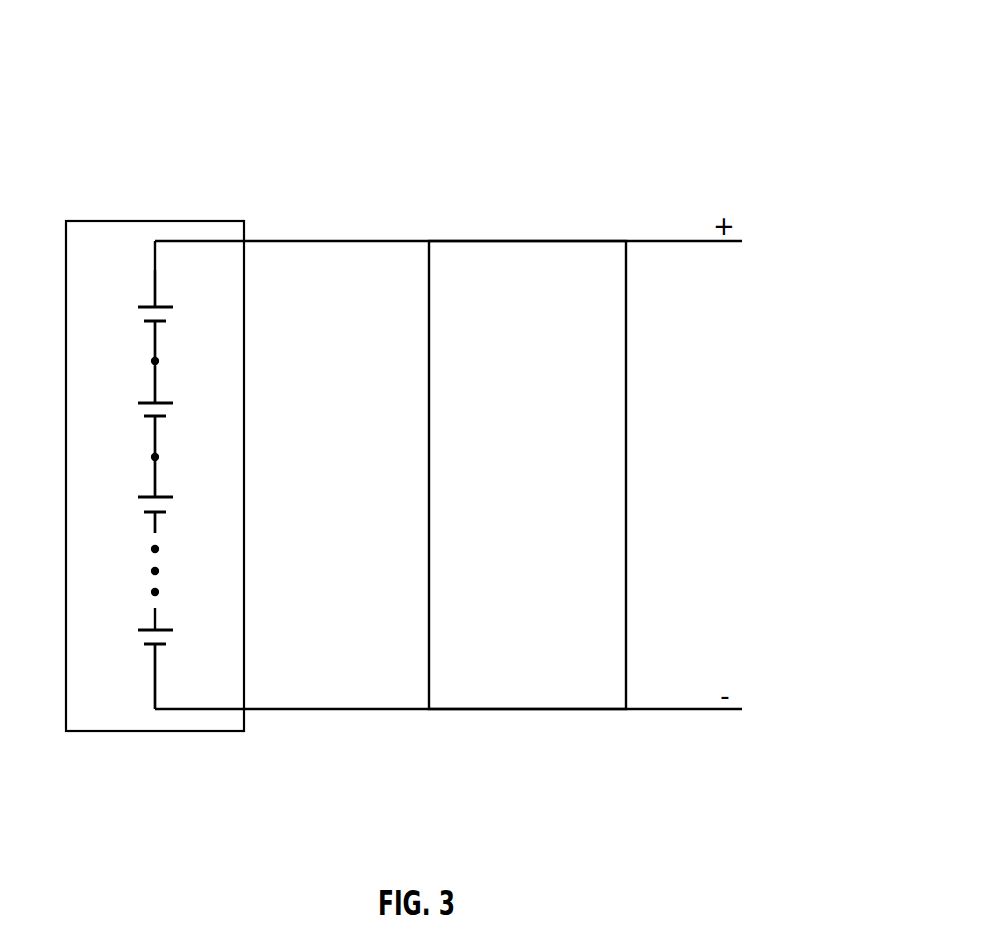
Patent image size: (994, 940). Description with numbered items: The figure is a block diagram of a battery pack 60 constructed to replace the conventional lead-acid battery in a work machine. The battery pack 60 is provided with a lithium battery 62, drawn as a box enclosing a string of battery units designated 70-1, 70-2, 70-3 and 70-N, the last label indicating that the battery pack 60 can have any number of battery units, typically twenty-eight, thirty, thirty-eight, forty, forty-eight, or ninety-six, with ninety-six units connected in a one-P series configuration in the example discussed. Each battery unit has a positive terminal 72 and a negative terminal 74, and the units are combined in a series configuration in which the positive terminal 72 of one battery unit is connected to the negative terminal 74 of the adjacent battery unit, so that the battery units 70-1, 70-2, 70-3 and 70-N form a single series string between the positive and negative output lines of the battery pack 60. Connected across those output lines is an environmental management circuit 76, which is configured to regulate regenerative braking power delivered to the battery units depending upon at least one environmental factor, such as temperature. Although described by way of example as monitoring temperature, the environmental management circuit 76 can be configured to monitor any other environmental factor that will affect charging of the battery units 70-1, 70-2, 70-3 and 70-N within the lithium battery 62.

The battery pack 60 is at (92, 57).
The lithium battery 62 is at (92, 219).
The battery unit 70-1 is at (152, 306).
The battery unit 70-2 is at (152, 402).
The battery unit 70-3 is at (152, 496).
The battery unit 70-N is at (152, 629).
The positive terminal 72 is at (157, 274).
The negative terminal 74 is at (157, 340).
The environmental management circuit 76 is at (627, 598).